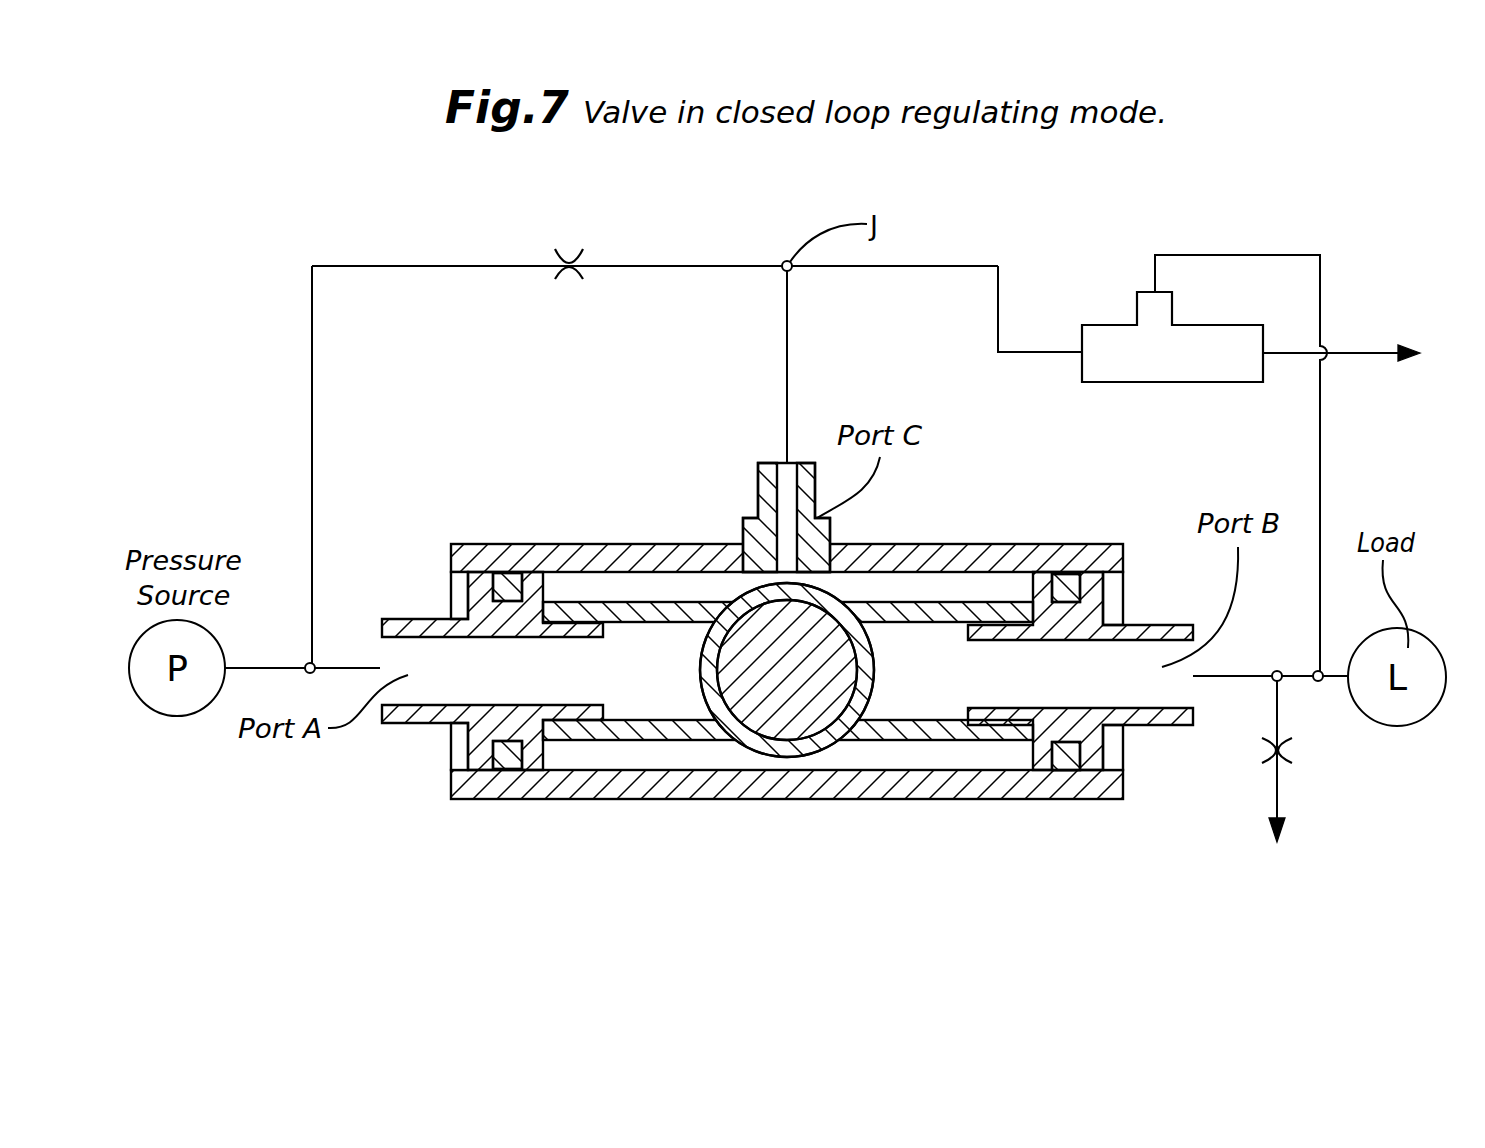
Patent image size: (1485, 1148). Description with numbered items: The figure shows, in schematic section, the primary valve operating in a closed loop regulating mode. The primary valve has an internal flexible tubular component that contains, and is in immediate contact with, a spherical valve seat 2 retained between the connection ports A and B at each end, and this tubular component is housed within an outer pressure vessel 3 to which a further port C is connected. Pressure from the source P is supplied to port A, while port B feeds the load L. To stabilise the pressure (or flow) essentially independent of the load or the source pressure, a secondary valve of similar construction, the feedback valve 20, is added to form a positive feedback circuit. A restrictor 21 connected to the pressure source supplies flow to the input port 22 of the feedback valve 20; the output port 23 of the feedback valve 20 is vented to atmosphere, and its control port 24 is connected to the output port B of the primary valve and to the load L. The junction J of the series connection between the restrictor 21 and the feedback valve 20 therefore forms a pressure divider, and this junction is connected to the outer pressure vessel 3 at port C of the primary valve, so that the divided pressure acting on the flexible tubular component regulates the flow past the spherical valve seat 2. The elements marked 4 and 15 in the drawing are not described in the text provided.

The spherical valve seat 2 is at (777, 663).
The outer pressure vessel 3 is at (940, 553).
The sleeve / ball seat 4 is at (703, 632).
The outlet restrictor 15 is at (1273, 763).
The feedback valve 20 is at (1123, 343).
The restrictor 21 is at (553, 258).
The input port 22 is at (1080, 355).
The output port 23 is at (1263, 352).
The control port 24 is at (1157, 290).